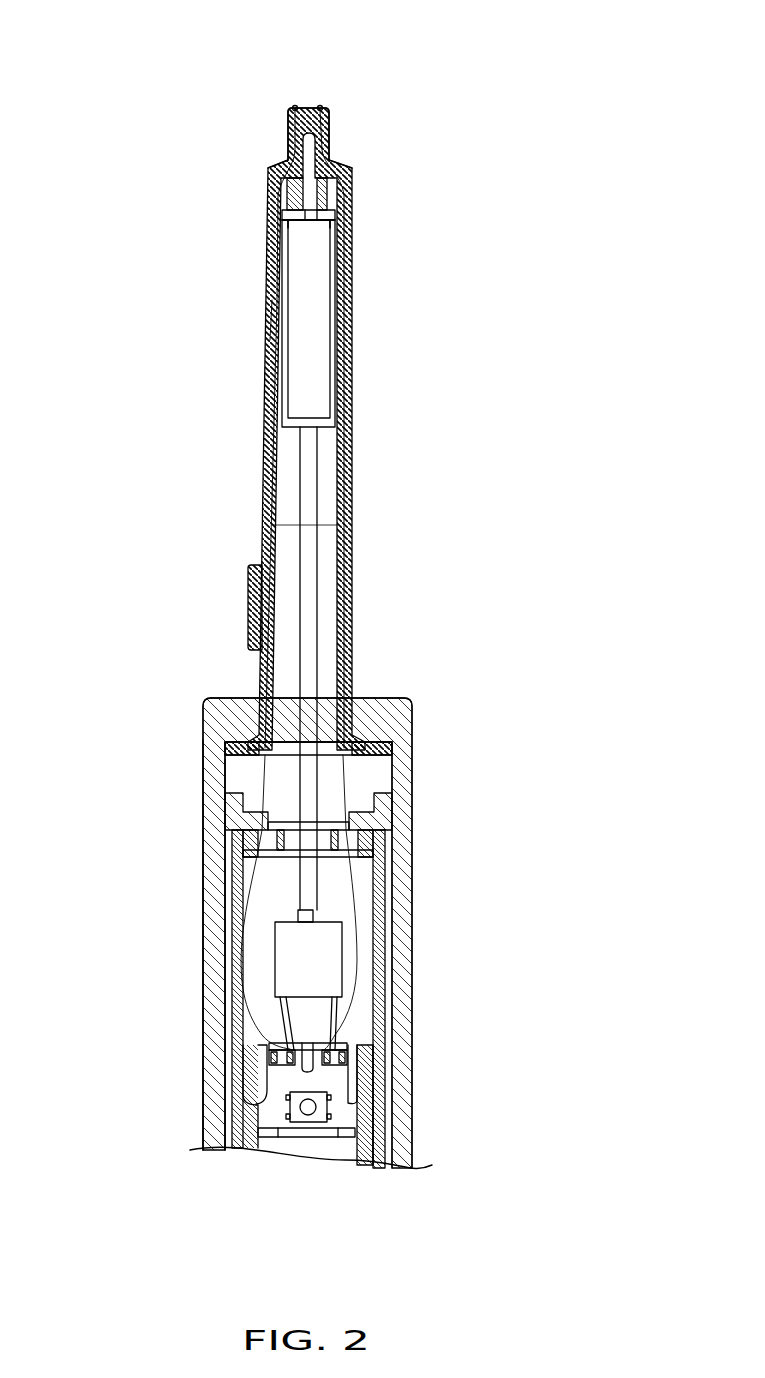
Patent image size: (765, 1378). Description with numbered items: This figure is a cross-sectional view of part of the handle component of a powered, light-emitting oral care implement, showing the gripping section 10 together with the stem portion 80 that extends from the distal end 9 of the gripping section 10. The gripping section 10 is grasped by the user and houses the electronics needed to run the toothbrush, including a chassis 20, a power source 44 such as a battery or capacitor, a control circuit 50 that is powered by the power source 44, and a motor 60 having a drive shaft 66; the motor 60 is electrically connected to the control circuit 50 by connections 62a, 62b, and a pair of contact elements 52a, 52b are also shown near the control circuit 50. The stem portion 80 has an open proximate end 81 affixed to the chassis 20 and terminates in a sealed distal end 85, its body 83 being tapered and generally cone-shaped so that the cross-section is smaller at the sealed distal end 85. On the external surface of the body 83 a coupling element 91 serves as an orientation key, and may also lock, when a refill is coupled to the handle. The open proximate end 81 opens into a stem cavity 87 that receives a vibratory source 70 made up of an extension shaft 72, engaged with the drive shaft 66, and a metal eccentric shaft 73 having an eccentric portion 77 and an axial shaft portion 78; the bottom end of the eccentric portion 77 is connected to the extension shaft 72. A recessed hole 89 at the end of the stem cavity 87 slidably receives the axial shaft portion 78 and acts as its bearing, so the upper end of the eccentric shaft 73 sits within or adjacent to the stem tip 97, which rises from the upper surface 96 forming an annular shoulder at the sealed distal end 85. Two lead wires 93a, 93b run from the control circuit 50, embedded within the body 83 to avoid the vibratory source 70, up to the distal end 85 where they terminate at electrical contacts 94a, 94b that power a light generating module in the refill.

The distal end 9 is at (381, 698).
The gripping section 10 is at (215, 921).
The chassis 20 is at (237, 975).
The power source 44 is at (342, 1150).
The control circuit 50 is at (272, 1115).
The first contact 52a is at (270, 1047).
The second contact 52b is at (347, 1050).
The motor 60 is at (342, 970).
The electrical connection 62a is at (286, 1020).
The electrical connection 62b is at (333, 1020).
The drive shaft 66 is at (310, 912).
The vibratory source 70 is at (287, 398).
The extension shaft 72 is at (333, 724).
The eccentric shaft 73 is at (308, 196).
The eccentric portion 77 is at (288, 228).
The axial shaft portion 78 is at (308, 212).
The stem portion 80 is at (370, 327).
The open proximate end 81 is at (308, 677).
The body 83 is at (350, 447).
The sealed distal end 85 is at (337, 148).
The stem cavity 87 is at (282, 336).
The recessed hole 89 is at (273, 168).
The coupling element 91 is at (256, 565).
The lead wire 93a is at (258, 900).
The lead wire 93b is at (352, 876).
The electrical contact 94a is at (296, 106).
The electrical contact 94b is at (323, 108).
The upper surface 96 is at (278, 168).
The stem tip 97 is at (286, 127).